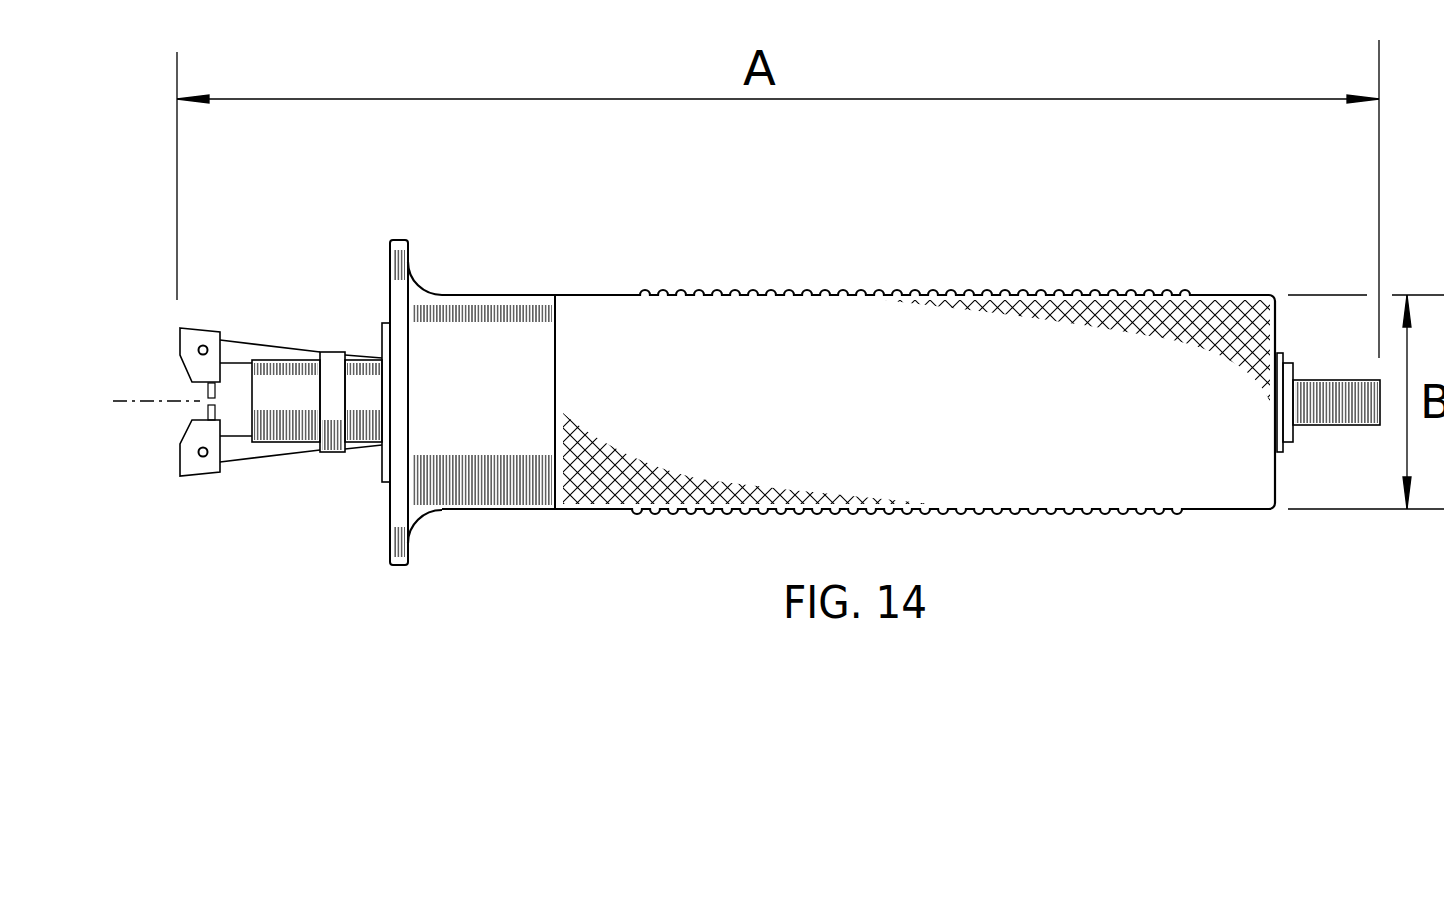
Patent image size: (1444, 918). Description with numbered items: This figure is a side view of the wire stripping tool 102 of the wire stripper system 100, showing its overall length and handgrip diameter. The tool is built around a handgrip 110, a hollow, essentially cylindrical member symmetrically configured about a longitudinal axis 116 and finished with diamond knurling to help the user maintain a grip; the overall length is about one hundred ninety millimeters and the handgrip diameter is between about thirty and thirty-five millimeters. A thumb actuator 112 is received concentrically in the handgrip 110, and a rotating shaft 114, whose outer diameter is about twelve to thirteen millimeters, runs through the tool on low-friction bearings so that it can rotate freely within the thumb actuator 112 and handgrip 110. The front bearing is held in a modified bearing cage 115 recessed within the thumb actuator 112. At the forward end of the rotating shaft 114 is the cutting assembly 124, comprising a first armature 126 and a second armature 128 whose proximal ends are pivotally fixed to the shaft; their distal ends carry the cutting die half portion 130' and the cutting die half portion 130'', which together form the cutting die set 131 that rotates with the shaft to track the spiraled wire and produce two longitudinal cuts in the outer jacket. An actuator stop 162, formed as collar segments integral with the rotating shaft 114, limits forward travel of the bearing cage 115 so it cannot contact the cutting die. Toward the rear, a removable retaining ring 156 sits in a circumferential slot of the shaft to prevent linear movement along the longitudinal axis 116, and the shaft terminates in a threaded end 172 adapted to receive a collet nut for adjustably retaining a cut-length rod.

The wire stripper system 100 is at (885, 346).
The wire stripping tool 102 is at (885, 364).
The handgrip 110 is at (733, 296).
The thumb actuator 112 is at (408, 270).
The rotating shaft 114 is at (282, 441).
The bearing cage 115 is at (383, 327).
The longitudinal axis 116 is at (158, 403).
The cutting assembly 124 is at (251, 360).
The first armature 126 is at (245, 343).
The second armature 128 is at (262, 455).
The cutting die half portion 130' is at (218, 339).
The cutting die half portion 130'' is at (181, 465).
The cutting die set 131 is at (168, 373).
The retaining ring 156 is at (1278, 353).
The actuator stop 162 is at (333, 452).
The threaded end 172 is at (1315, 427).